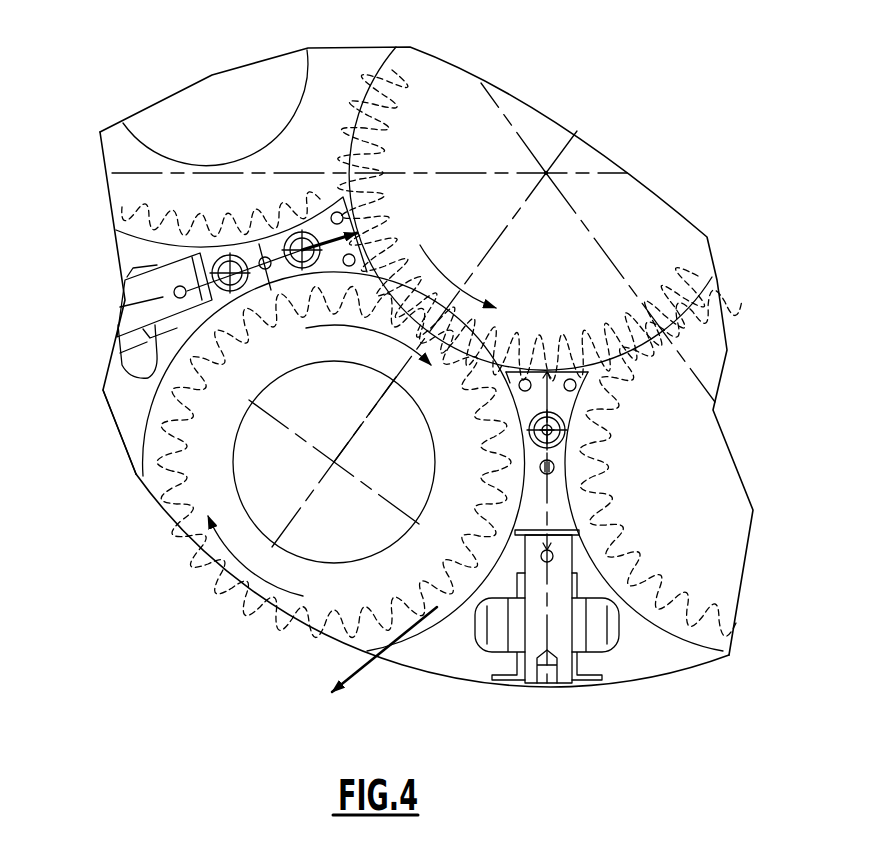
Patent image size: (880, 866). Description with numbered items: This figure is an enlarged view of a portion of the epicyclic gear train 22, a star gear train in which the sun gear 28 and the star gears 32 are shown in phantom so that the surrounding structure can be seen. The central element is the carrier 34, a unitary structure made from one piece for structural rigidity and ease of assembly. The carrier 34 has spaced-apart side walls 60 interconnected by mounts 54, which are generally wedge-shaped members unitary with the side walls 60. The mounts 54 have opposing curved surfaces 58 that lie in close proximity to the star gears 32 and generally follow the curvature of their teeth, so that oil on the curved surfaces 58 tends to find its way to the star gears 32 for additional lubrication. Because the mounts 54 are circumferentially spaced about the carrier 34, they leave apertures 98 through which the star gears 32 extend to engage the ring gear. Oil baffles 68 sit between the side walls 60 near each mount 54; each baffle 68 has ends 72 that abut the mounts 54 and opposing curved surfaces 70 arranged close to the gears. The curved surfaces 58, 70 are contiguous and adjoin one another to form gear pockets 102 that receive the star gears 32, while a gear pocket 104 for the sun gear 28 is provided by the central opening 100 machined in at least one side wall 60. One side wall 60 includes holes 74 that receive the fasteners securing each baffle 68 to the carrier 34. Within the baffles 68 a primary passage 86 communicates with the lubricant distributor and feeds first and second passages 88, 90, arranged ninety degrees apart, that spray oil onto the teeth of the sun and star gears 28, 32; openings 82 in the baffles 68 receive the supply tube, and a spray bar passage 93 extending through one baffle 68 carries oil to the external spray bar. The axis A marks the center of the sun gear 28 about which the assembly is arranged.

The epicyclic gear train 22 is at (664, 658).
The sun gear 28 is at (722, 318).
The star gears 32 is at (222, 645).
The carrier 34 is at (417, 672).
The mounts 54 is at (483, 672).
The curved surfaces 58 is at (500, 528).
The side walls 60 is at (352, 640).
The oil baffles 68 is at (582, 476).
The curved surfaces 70 is at (513, 412).
The ends 72 is at (593, 537).
The holes 74 is at (530, 335).
The openings 82 is at (510, 383).
The primary passage 86 is at (298, 242).
The first passage 88 is at (548, 370).
The second passage 90 is at (536, 432).
The spray bar passage 93 is at (205, 247).
The apertures 98 is at (137, 488).
The central opening 100 is at (400, 250).
The gear pockets 102 is at (197, 482).
The gear pocket 104 is at (489, 245).
The axis A is at (547, 171).